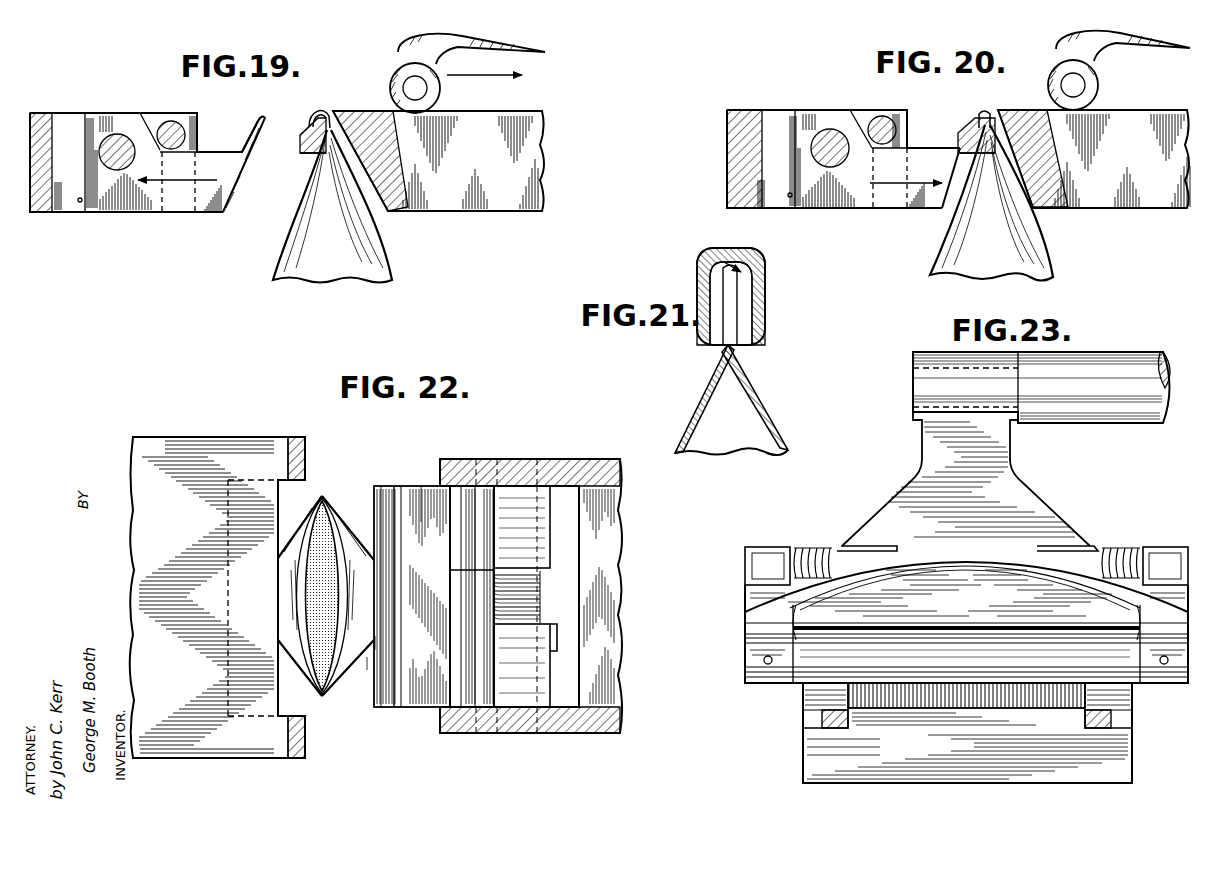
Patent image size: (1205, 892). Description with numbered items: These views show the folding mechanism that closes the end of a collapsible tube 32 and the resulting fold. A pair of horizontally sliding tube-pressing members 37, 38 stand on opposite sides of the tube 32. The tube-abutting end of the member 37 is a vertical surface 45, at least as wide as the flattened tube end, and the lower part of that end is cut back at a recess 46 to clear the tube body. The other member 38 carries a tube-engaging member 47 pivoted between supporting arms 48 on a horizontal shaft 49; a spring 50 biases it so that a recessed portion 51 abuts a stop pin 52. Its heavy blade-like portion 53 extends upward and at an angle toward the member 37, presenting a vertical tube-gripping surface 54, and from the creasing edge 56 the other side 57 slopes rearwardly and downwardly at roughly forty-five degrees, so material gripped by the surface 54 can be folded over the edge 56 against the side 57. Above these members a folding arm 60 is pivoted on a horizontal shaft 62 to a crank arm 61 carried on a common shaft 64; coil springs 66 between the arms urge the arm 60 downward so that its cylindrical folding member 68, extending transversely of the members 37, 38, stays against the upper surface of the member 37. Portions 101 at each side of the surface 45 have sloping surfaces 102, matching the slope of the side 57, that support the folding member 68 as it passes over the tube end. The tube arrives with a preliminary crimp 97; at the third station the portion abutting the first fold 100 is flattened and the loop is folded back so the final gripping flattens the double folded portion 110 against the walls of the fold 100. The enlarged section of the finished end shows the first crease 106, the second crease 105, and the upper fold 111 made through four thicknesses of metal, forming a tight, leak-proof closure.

In FIG. 19, the tube 32 is at (293, 260).
In FIG. 20, the tube 32 is at (1050, 250).
In FIG. 21, the tube 32 is at (695, 444).
In FIG. 22, the tube 32 is at (360, 528).
In FIG. 19, the tube-pressing member 37 is at (490, 200).
In FIG. 20, the tube-pressing member 37 is at (1135, 196).
In FIG. 22, the tube-pressing member 37 is at (230, 760).
In FIG. 23, the tube-pressing member 37 is at (803, 758).
In FIG. 19, the tube-pressing member 38 is at (48, 113).
In FIG. 20, the tube-pressing member 38 is at (740, 155).
In FIG. 22, the tube-pressing member 38 is at (592, 461).
In FIG. 22, the vertical surface 45 is at (279, 663).
In FIG. 23, the vertical surface 45 is at (965, 757).
In FIG. 22, the recess 46 is at (242, 575).
In FIG. 19, the tube-engaging member 47 is at (212, 212).
In FIG. 20, the tube-engaging member 47 is at (860, 195).
In FIG. 22, the tube-engaging member 47 is at (431, 678).
In FIG. 22, the supporting arms 48 is at (441, 459).
In FIG. 19, the horizontal shaft 49 is at (110, 136).
In FIG. 20, the horizontal shaft 49 is at (825, 132).
In FIG. 22, the horizontal shaft 49 is at (535, 607).
In FIG. 22, the spring 50 is at (540, 596).
In FIG. 22, the recessed portion 51 is at (425, 518).
In FIG. 22, the stop pin 52 is at (465, 553).
In FIG. 22, the blade-like portion 53 is at (395, 709).
In FIG. 22, the tube-gripping surface 54 is at (370, 670).
In FIG. 22, the creasing edge 56 is at (376, 644).
In FIG. 22, the sloping side 57 is at (384, 680).
In FIG. 19, the folding arm 60 is at (526, 56).
In FIG. 20, the folding arm 60 is at (1160, 50).
In FIG. 23, the folding arm 60 is at (745, 628).
In FIG. 23, the crank arm 61 is at (913, 493).
In FIG. 23, the horizontal shaft 62 is at (1195, 560).
In FIG. 23, the common shaft 64 is at (1093, 415).
In FIG. 23, the coil springs 66 is at (810, 546).
In FIG. 19, the folding member 68 is at (440, 95).
In FIG. 20, the folding member 68 is at (1098, 92).
In FIG. 23, the folding member 68 is at (983, 657).
In FIG. 22, the preliminary crimp 97 is at (340, 655).
In FIG. 19, the folded portion 100 is at (335, 114).
In FIG. 20, the folded portion 100 is at (992, 118).
In FIG. 19, the portions 101 is at (303, 151).
In FIG. 20, the portions 101 is at (960, 149).
In FIG. 22, the portions 101 is at (288, 481).
In FIG. 23, the portions 101 is at (850, 718).
In FIG. 22, the sloping surface 102 is at (306, 449).
In FIG. 23, the sloping surface 102 is at (820, 698).
In FIG. 21, the crease 105 is at (708, 347).
In FIG. 21, the crease 106 is at (760, 347).
In FIG. 19, the double folded portion 110 is at (312, 118).
In FIG. 20, the double folded portion 110 is at (979, 117).
In FIG. 21, the upper fold 111 is at (724, 248).